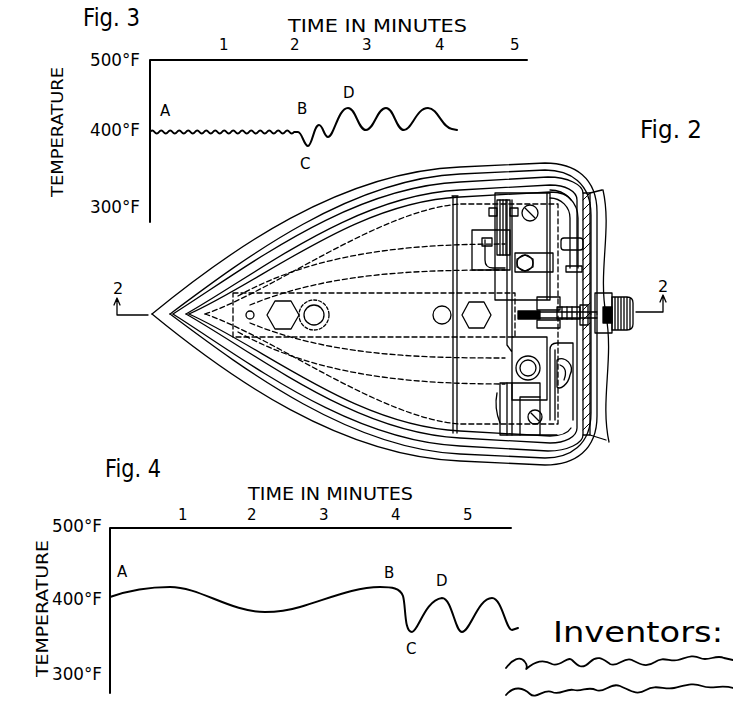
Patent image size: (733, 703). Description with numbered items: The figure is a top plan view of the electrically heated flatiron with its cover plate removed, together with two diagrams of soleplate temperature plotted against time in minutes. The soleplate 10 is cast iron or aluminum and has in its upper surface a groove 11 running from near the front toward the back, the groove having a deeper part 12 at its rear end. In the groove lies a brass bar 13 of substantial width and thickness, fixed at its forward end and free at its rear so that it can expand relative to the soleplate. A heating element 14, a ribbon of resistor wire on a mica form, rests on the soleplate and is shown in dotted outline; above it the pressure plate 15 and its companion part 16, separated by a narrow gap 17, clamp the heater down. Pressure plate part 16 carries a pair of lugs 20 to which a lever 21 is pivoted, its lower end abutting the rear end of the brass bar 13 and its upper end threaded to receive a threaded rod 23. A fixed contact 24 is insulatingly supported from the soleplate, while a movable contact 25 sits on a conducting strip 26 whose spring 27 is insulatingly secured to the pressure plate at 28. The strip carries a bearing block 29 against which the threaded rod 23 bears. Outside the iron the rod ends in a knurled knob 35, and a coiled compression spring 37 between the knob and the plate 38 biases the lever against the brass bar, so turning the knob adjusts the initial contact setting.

In FIG. 3, the soleplate 10 is at (165, 0).
In FIG. 2, the soleplate 10 is at (192, 287).
In FIG. 3, the groove 11 is at (240, 0).
In FIG. 3, the deeper part 12 is at (573, 0).
In FIG. 3, the brass bar 13 is at (322, 0).
In FIG. 2, the brass bar 13 is at (252, 347).
In FIG. 2, the heating element 14 is at (270, 280).
In FIG. 2, the pressure plate 15 is at (345, 230).
In FIG. 2, the pressure plate 16 is at (478, 200).
In FIG. 2, the narrow gap 17 is at (455, 196).
In FIG. 2, the lugs 20 is at (560, 300).
In FIG. 3, the lever 21 is at (535, 0).
In FIG. 2, the lever 21 is at (550, 335).
In FIG. 2, the threaded rod 23 is at (590, 298).
In FIG. 2, the fixed contact 24 is at (525, 433).
In FIG. 2, the movable contact 25 is at (513, 437).
In FIG. 2, the conducting strip 26 is at (503, 403).
In FIG. 2, the spring 27 is at (508, 253).
In FIG. 2, the insulating securing point 28 is at (497, 200).
In FIG. 2, the bearing block 29 is at (575, 285).
In FIG. 2, the knurled knob 35 is at (636, 322).
In FIG. 2, the coiled compression spring 37 is at (600, 330).
In FIG. 2, the plate 38 is at (575, 322).